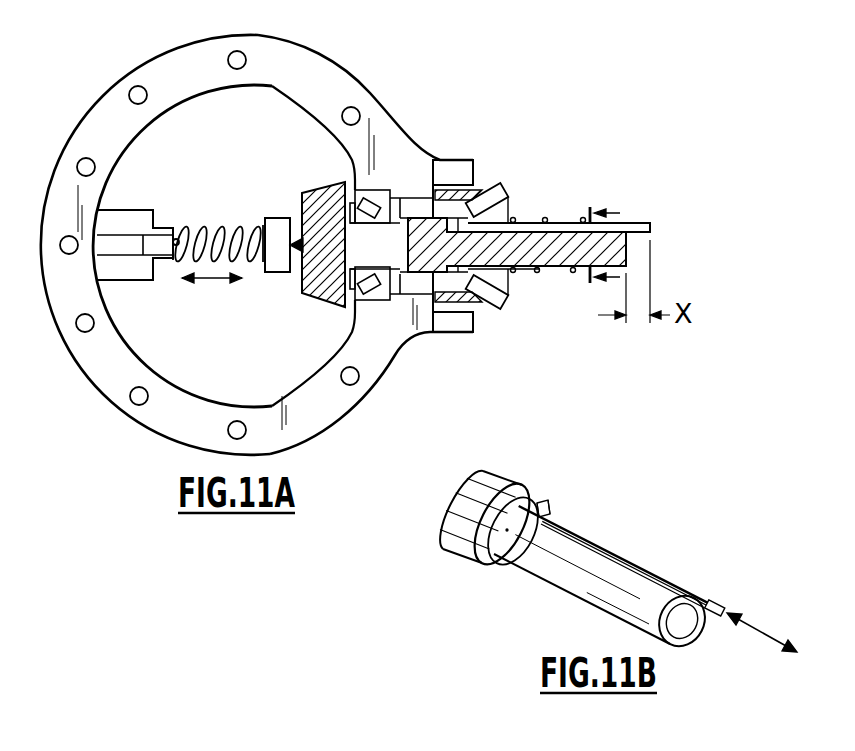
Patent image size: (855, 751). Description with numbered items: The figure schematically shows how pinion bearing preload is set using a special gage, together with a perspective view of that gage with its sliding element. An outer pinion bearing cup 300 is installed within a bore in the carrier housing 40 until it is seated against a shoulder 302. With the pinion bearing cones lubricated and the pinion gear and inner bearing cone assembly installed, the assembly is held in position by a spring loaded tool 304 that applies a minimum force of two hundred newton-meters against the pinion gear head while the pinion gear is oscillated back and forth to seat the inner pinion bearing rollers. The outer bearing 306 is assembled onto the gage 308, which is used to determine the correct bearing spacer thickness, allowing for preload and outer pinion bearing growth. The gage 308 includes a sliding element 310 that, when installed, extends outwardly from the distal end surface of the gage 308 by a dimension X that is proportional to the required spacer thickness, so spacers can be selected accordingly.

In FIG. 11A, the carrier housing 40 is at (320, 82).
In FIG. 11A, the outer pinion bearing cup 300 is at (452, 186).
In FIG. 11A, the shoulder 302 is at (432, 188).
In FIG. 11A, the spring loaded tool 304 is at (198, 228).
In FIG. 11A, the outer bearing 306 is at (498, 212).
In FIG. 11A, the gage 308 is at (478, 256).
In FIG. 11B, the gage 308 is at (572, 578).
In FIG. 11A, the sliding element 310 is at (636, 222).
In FIG. 11B, the sliding element 310 is at (714, 600).